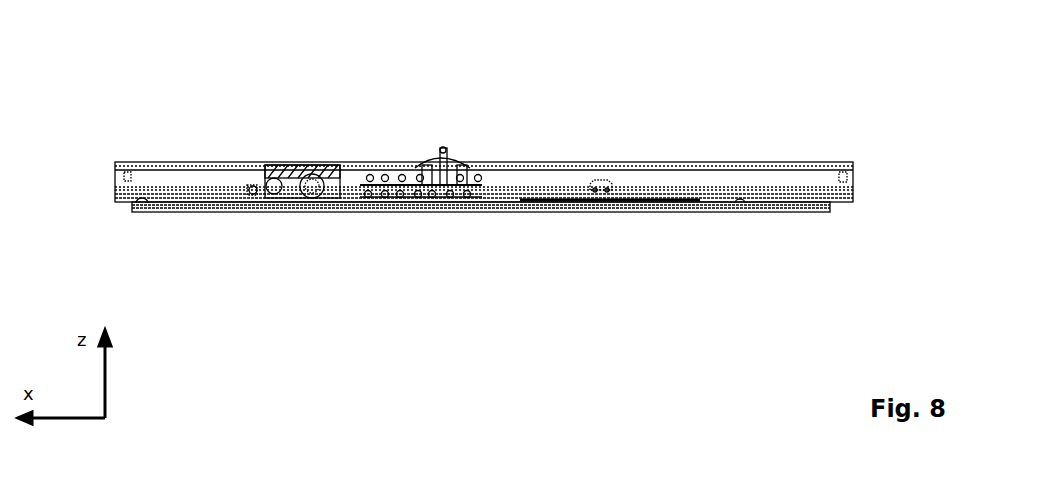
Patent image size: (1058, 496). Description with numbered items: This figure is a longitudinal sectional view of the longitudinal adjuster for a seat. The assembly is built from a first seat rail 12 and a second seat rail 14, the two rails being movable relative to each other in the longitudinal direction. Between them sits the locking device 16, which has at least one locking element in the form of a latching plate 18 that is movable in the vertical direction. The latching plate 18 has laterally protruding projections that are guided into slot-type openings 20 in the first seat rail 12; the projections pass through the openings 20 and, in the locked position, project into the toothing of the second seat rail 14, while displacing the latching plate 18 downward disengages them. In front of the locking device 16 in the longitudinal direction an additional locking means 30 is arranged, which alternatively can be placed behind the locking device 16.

The first seat rail 12 is at (693, 180).
The second seat rail 14 is at (168, 205).
The locking device 16 is at (453, 182).
The latching plate 18 is at (476, 193).
The slot-type openings 20 is at (383, 195).
The additional locking means 30 is at (375, 112).